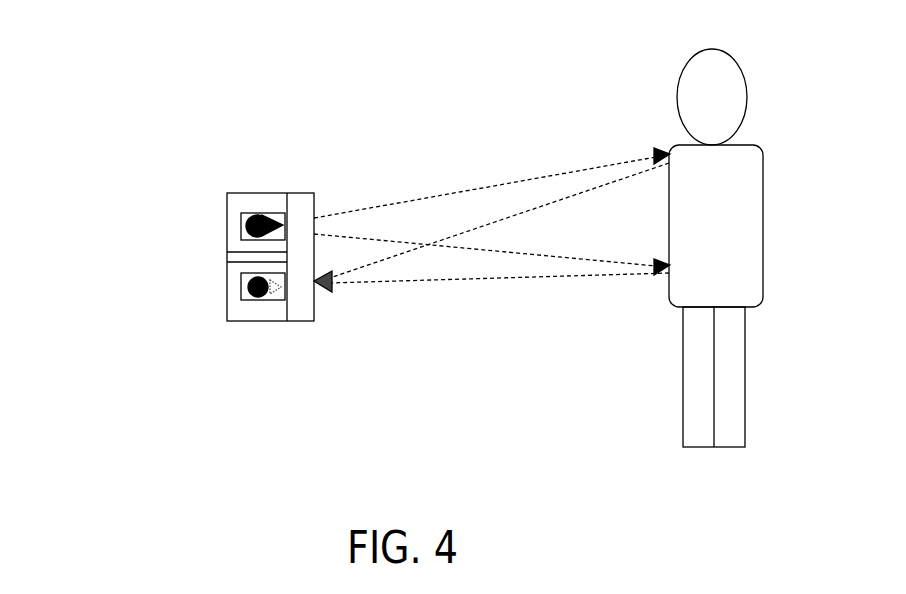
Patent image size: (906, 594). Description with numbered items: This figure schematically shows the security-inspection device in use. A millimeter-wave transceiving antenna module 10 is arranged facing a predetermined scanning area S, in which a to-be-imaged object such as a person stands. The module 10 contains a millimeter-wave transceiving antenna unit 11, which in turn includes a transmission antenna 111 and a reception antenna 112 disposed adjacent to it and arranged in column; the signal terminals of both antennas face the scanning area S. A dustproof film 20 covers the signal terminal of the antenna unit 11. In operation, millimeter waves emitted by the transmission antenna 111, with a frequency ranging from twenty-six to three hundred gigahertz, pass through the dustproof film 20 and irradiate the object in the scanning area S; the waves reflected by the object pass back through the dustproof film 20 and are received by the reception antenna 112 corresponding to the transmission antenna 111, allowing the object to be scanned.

The millimeter-wave transceiving antenna module 10 is at (183, 267).
The millimeter-wave transceiving antenna unit 11 is at (169, 235).
The transmission antenna 111 is at (205, 205).
The reception antenna 112 is at (205, 271).
The dustproof film 20 is at (221, 211).
The predetermined scanning area S is at (577, 100).